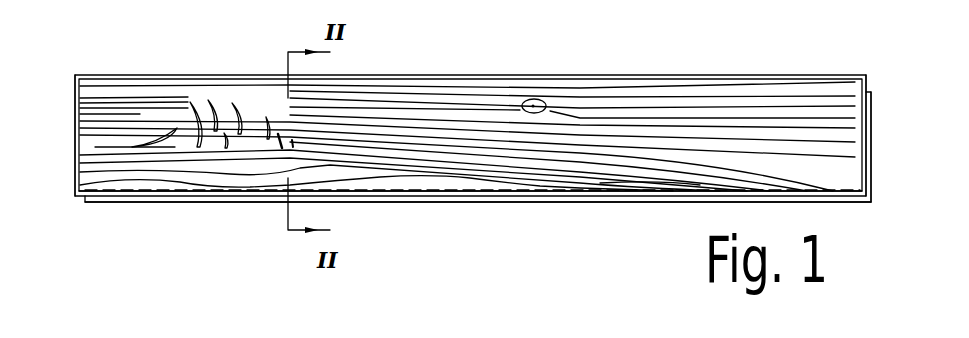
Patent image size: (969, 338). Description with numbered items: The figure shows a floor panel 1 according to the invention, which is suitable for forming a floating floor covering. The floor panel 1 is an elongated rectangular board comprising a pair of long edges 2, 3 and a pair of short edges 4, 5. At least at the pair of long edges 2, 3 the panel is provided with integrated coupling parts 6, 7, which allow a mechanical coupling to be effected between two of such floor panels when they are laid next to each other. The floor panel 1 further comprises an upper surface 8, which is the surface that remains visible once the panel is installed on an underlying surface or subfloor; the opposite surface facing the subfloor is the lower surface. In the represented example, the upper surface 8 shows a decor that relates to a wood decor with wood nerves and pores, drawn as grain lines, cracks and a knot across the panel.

The floor panel 1 is at (171, 216).
The long edge 2 is at (436, 69).
The long edge 3 is at (426, 212).
The short edge 4 is at (70, 142).
The short edge 5 is at (878, 167).
The coupling part 6 is at (582, 78).
The coupling part 7 is at (548, 197).
The upper surface 8 is at (685, 128).